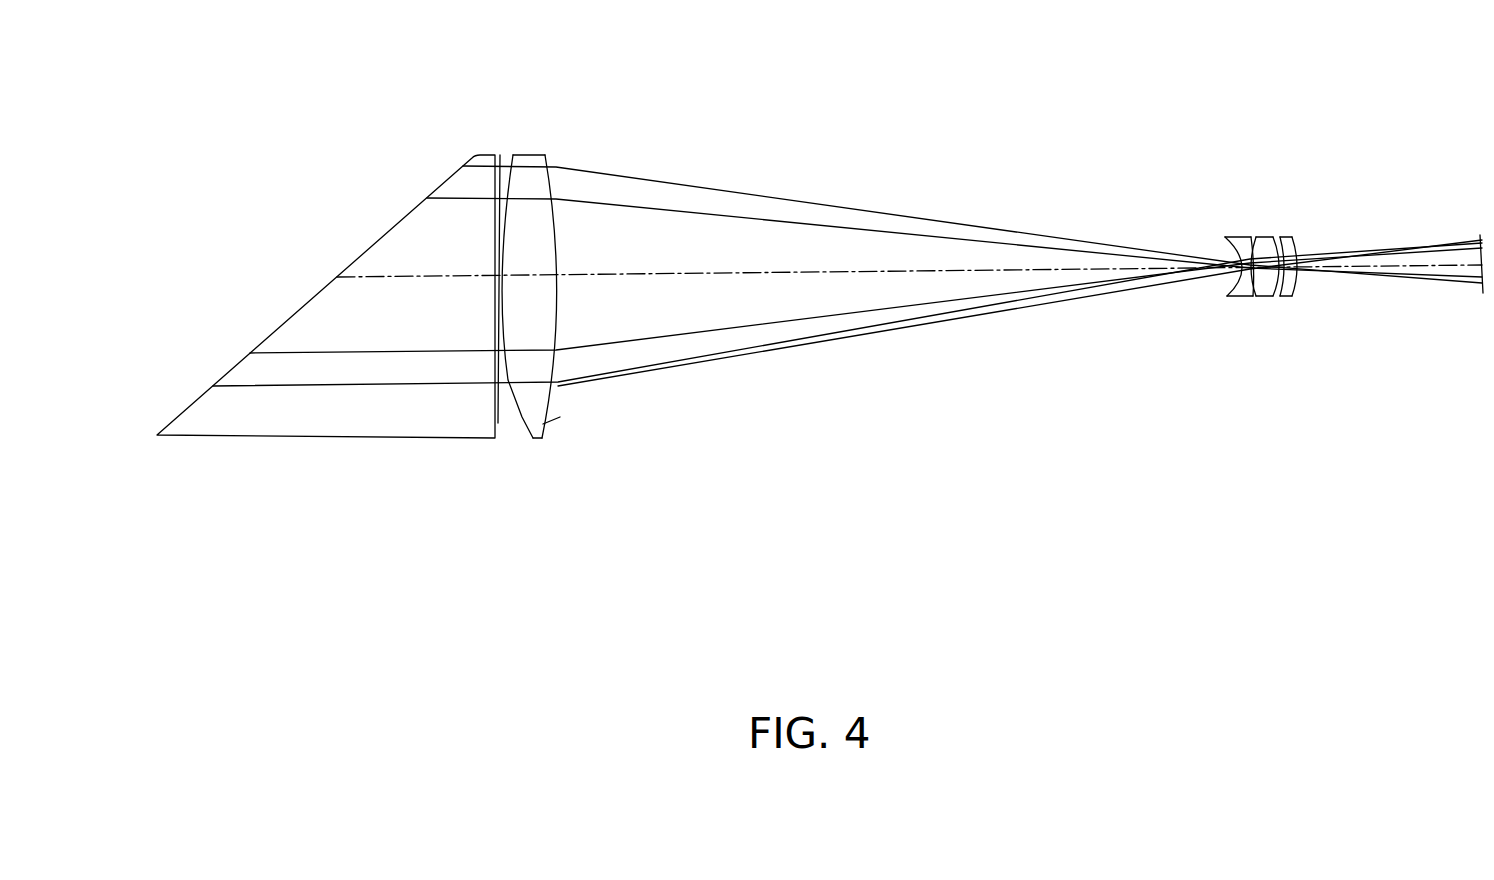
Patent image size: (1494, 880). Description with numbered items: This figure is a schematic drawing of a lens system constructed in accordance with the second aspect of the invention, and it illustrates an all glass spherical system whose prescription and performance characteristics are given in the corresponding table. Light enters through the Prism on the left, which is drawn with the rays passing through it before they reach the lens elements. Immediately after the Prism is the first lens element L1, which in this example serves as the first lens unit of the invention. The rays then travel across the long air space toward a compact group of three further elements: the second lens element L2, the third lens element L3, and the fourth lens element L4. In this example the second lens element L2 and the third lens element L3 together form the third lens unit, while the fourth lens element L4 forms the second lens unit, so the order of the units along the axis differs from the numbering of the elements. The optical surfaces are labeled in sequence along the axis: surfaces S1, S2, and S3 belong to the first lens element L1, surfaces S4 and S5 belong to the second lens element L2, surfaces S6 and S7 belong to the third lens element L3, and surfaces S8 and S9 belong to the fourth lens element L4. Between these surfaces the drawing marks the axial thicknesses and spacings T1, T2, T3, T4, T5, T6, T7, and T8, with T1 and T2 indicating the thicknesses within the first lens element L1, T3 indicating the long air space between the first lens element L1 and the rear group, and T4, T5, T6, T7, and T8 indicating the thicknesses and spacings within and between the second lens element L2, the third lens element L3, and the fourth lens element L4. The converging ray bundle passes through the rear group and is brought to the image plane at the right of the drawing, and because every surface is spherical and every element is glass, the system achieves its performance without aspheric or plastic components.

The prism Prism is at (326, 296).
The first lens element L1 is at (533, 275).
The second lens element L2 is at (1167, 259).
The third lens element L3 is at (1324, 328).
The fourth lens element L4 is at (1381, 225).
The surface S1 is at (498, 423).
The surface S2 is at (522, 417).
The surface S3 is at (543, 423).
The surface S4 is at (1228, 290).
The surface S5 is at (1252, 296).
The surface S6 is at (1265, 292).
The surface S7 is at (1272, 290).
The surface S8 is at (1293, 287).
The surface S9 is at (1296, 282).
The thickness T1 is at (500, 155).
The thickness T2 is at (532, 263).
The thickness T3 is at (812, 272).
The thickness T4 is at (1228, 296).
The thickness T5 is at (1252, 290).
The thickness T6 is at (1263, 287).
The thickness T7 is at (1277, 287).
The thickness T8 is at (1297, 257).